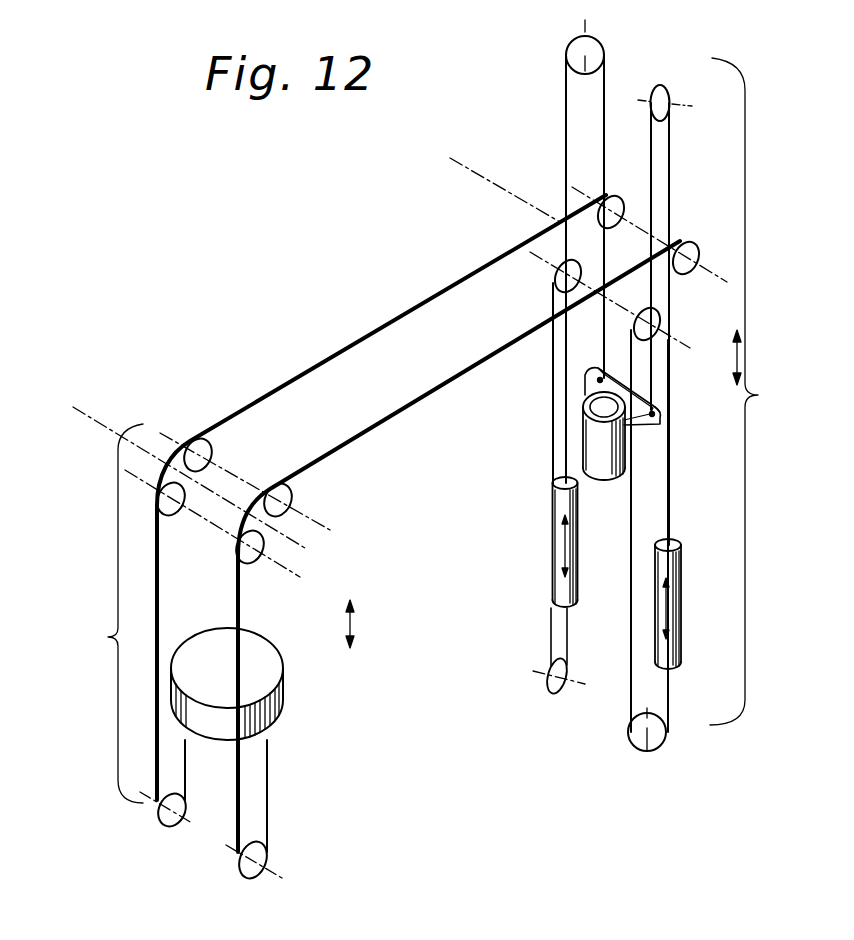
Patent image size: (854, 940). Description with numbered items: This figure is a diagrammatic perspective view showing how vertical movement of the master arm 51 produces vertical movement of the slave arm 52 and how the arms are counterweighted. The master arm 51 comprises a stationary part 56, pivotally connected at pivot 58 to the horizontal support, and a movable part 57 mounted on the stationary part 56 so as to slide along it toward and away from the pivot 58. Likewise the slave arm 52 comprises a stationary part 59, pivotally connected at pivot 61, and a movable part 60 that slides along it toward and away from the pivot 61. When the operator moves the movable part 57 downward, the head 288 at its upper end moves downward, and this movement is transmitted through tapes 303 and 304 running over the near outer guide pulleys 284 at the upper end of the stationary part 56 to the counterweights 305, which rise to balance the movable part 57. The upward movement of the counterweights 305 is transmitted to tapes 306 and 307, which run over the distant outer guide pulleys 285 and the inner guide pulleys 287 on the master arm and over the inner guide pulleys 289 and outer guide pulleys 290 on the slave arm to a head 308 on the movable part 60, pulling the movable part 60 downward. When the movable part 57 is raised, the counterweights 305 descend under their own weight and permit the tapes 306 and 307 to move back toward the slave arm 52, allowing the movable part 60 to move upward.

The guide pulleys 284 is at (603, 45).
The tape 304 is at (604, 112).
The tape 303 is at (651, 181).
The pivot 58 is at (455, 165).
The guide pulleys 287 is at (600, 212).
The tape 307 is at (378, 335).
The tape 306 is at (396, 412).
The movable part 57 is at (662, 400).
The head 288 is at (603, 472).
The counterweights 305 is at (552, 536).
The guide pulleys 285 is at (550, 694).
The stationary part 56 is at (753, 391).
The pulleys 289 is at (168, 483).
The pivot 61 is at (86, 418).
The slave arm 52 is at (325, 602).
The movable part 60 is at (285, 655).
The head 308 is at (284, 700).
The stationary part 59 is at (100, 613).
The guide pulleys 290 is at (166, 830).
The master arm 51 is at (520, 600).